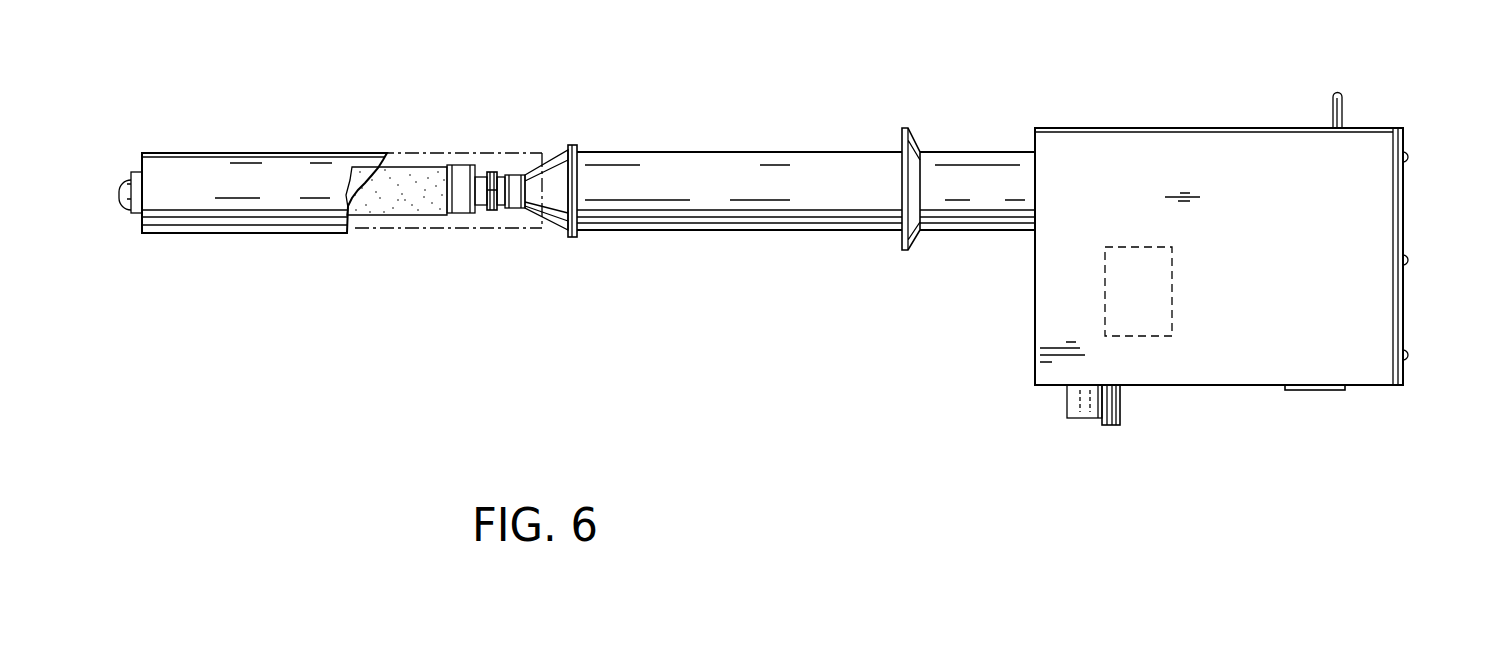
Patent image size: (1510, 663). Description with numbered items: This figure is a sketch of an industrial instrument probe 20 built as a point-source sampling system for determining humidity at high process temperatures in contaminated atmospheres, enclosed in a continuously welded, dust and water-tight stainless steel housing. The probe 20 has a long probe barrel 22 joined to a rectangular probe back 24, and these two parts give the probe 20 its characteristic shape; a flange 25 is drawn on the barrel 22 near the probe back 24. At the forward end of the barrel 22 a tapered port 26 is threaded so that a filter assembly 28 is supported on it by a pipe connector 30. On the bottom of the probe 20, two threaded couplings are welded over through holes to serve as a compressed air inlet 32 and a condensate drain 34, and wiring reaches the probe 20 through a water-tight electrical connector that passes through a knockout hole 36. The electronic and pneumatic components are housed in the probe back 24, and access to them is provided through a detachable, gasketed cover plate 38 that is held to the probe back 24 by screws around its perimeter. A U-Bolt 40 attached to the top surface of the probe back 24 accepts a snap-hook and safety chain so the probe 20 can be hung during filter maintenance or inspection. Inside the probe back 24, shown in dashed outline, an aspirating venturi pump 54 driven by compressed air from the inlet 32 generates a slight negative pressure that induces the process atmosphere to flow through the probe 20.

The instrument probe 20 is at (985, 100).
The probe barrel 22 is at (723, 152).
The probe back 24 is at (1098, 128).
The mounting flange 25 is at (913, 243).
The tapered port 26 is at (556, 222).
The filter assembly 28 is at (256, 130).
The pipe connector 30 is at (490, 172).
The compressed air inlet 32 is at (1060, 412).
The condensate drain 34 is at (1120, 410).
The knockout hole 36 is at (1303, 390).
The cover plate 38 is at (1405, 215).
The U-Bolt 40 is at (1345, 102).
The venturi pump 54 is at (1103, 300).